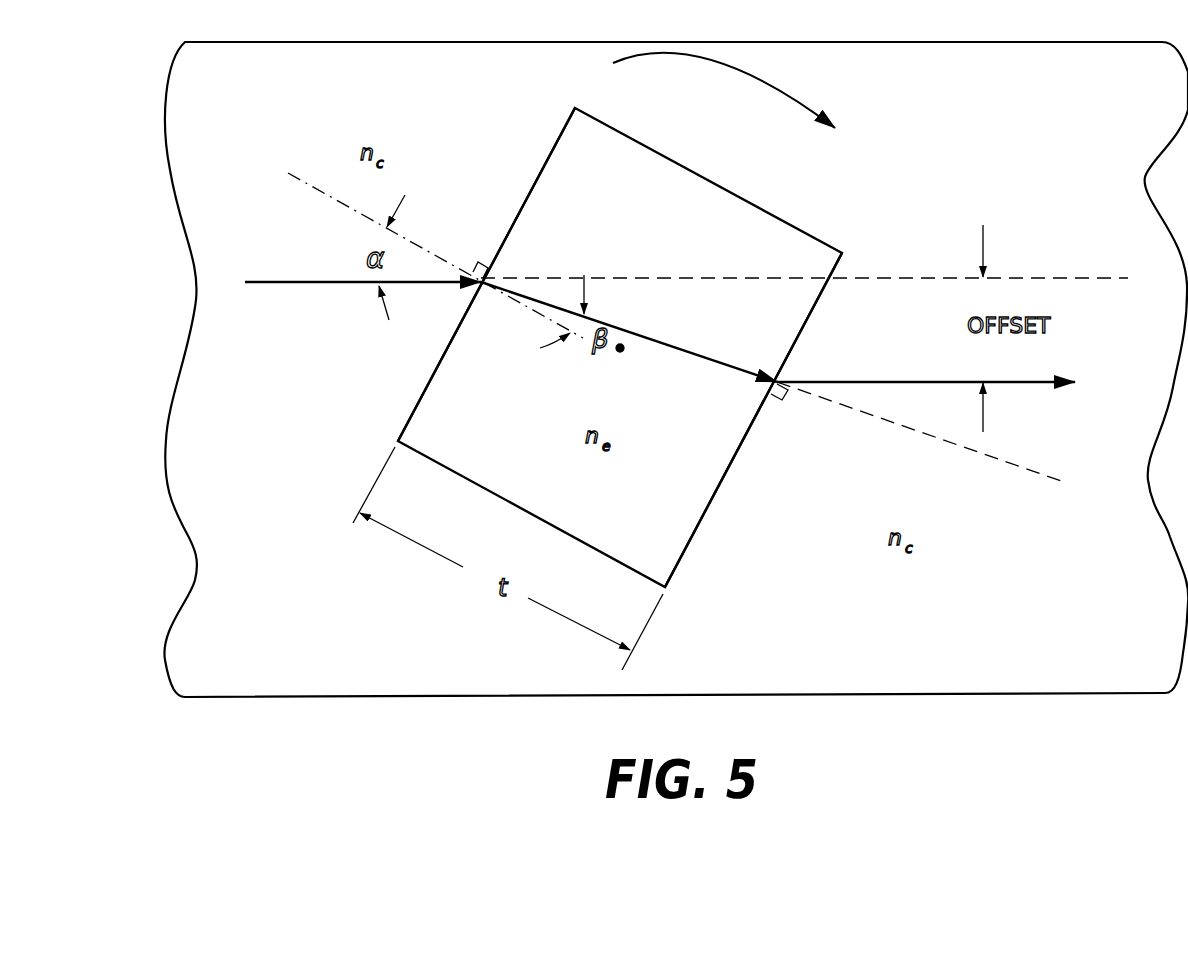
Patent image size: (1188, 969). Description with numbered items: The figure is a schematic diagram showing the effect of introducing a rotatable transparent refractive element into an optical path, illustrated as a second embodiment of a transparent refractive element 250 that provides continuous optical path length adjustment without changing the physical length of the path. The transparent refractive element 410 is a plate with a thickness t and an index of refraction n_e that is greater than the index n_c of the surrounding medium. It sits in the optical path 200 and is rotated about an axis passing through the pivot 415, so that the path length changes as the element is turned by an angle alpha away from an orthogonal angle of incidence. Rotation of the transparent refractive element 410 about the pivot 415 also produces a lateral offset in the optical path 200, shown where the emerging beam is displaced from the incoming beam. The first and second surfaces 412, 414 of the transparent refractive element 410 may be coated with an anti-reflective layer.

The optical path 200 is at (330, 284).
The transparent refractive element 250 is at (943, 40).
The transparent refractive element 410 is at (753, 222).
The first surface 412 is at (525, 178).
The second surface 414 is at (715, 522).
The pivot 415 is at (628, 352).